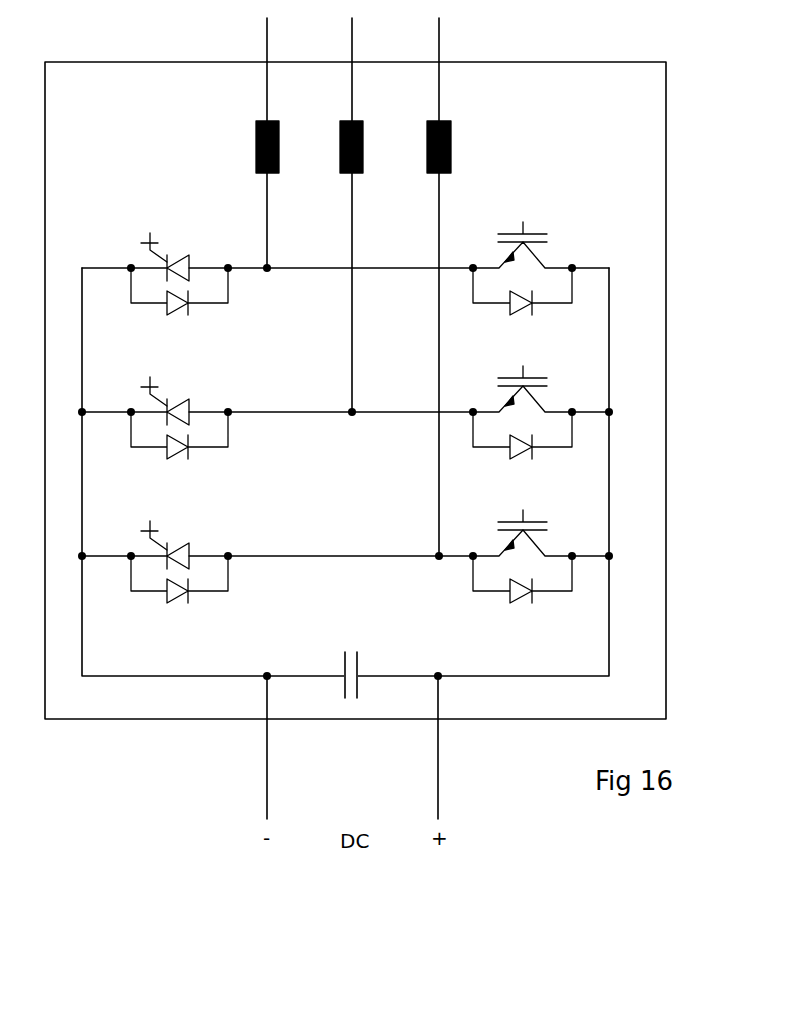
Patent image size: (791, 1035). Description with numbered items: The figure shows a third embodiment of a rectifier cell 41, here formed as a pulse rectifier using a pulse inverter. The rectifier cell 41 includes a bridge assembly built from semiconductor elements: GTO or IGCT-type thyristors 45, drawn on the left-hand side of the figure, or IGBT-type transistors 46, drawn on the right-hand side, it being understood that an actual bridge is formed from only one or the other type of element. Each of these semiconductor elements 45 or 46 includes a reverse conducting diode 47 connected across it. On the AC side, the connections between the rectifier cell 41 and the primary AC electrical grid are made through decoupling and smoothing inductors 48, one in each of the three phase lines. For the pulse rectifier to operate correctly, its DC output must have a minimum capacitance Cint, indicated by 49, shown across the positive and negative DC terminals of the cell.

The rectifier cell 41 is at (635, 68).
The thyristor 45 is at (173, 245).
The IGBT-type transistor 46 is at (530, 225).
The reverse conducting diode 47 is at (173, 607).
The decoupling and smoothing inductor 48 is at (457, 145).
The minimum capacitance Cint 49 is at (363, 663).